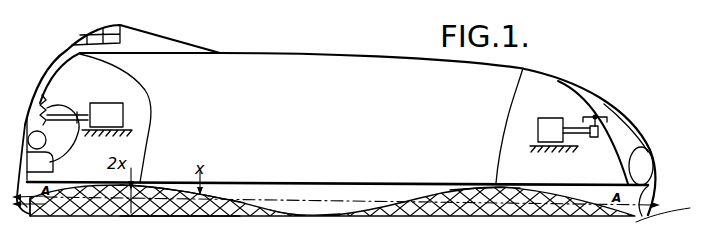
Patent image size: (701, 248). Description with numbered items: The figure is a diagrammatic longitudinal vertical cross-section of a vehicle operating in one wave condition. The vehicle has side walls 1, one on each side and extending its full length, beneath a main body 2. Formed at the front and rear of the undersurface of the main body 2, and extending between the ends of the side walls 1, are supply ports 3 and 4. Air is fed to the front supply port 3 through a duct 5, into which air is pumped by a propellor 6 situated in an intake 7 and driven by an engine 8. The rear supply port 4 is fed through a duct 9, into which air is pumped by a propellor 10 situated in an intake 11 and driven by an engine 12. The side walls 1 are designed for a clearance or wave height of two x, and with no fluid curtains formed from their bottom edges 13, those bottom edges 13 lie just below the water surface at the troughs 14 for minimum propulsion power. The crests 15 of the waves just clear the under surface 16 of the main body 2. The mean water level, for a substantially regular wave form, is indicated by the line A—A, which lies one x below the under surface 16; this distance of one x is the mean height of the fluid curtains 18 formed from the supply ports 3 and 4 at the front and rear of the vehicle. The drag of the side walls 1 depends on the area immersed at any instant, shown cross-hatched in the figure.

The side walls 1 is at (107, 203).
The main body 2 is at (349, 63).
The supply port 3 is at (37, 140).
The supply port 4 is at (655, 168).
The duct 5 is at (56, 164).
The propellor 6 is at (54, 105).
The intake 7 is at (40, 104).
The engine 8 is at (105, 104).
The duct 9 is at (645, 150).
The propellor 10 is at (604, 104).
The intake 11 is at (585, 93).
The engine 12 is at (542, 118).
The bottom edges 13 is at (177, 212).
The troughs 14 is at (294, 218).
The crests 15 is at (152, 190).
The under surface 16 is at (369, 187).
The fluid curtains 18 is at (43, 215).